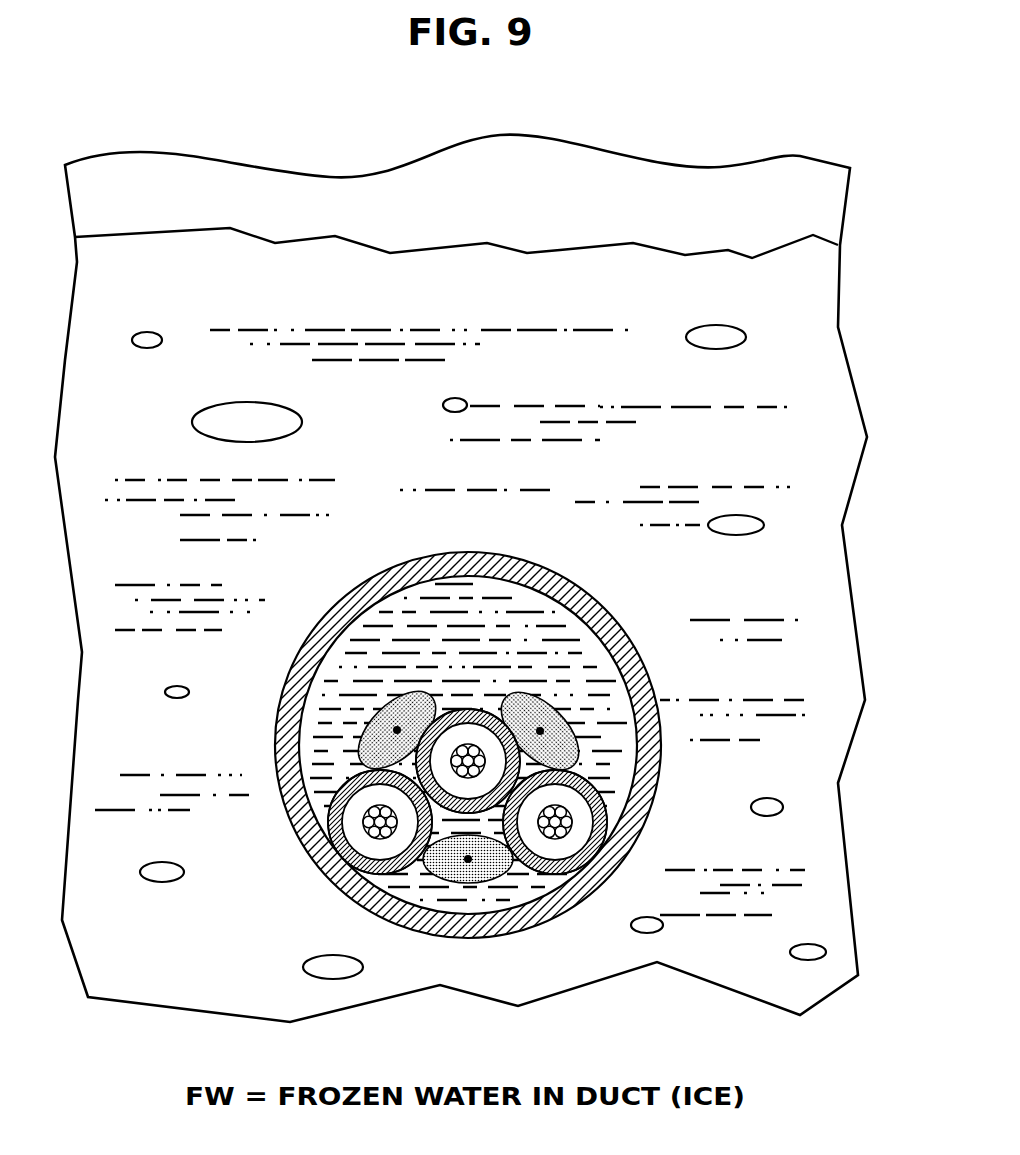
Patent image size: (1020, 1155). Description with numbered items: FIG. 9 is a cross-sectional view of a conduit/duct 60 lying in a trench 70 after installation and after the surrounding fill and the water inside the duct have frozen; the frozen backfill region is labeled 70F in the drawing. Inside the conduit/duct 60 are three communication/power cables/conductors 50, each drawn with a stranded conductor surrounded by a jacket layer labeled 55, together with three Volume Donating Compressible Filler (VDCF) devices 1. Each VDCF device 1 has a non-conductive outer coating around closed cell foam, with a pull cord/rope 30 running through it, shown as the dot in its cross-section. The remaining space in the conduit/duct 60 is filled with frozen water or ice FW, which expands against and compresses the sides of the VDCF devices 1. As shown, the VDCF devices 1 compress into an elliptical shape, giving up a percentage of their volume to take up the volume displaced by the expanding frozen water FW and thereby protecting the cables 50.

The VDCF device 1 is at (523, 697).
The pull cord/rope 30 is at (545, 731).
The communication/power cables/conductors 50 is at (574, 818).
The cable insulation 55 is at (552, 870).
The conduit/duct 60 is at (607, 607).
The trench 70 is at (785, 327).
The frost line 70F is at (592, 327).
The frozen water or ice FW is at (320, 713).